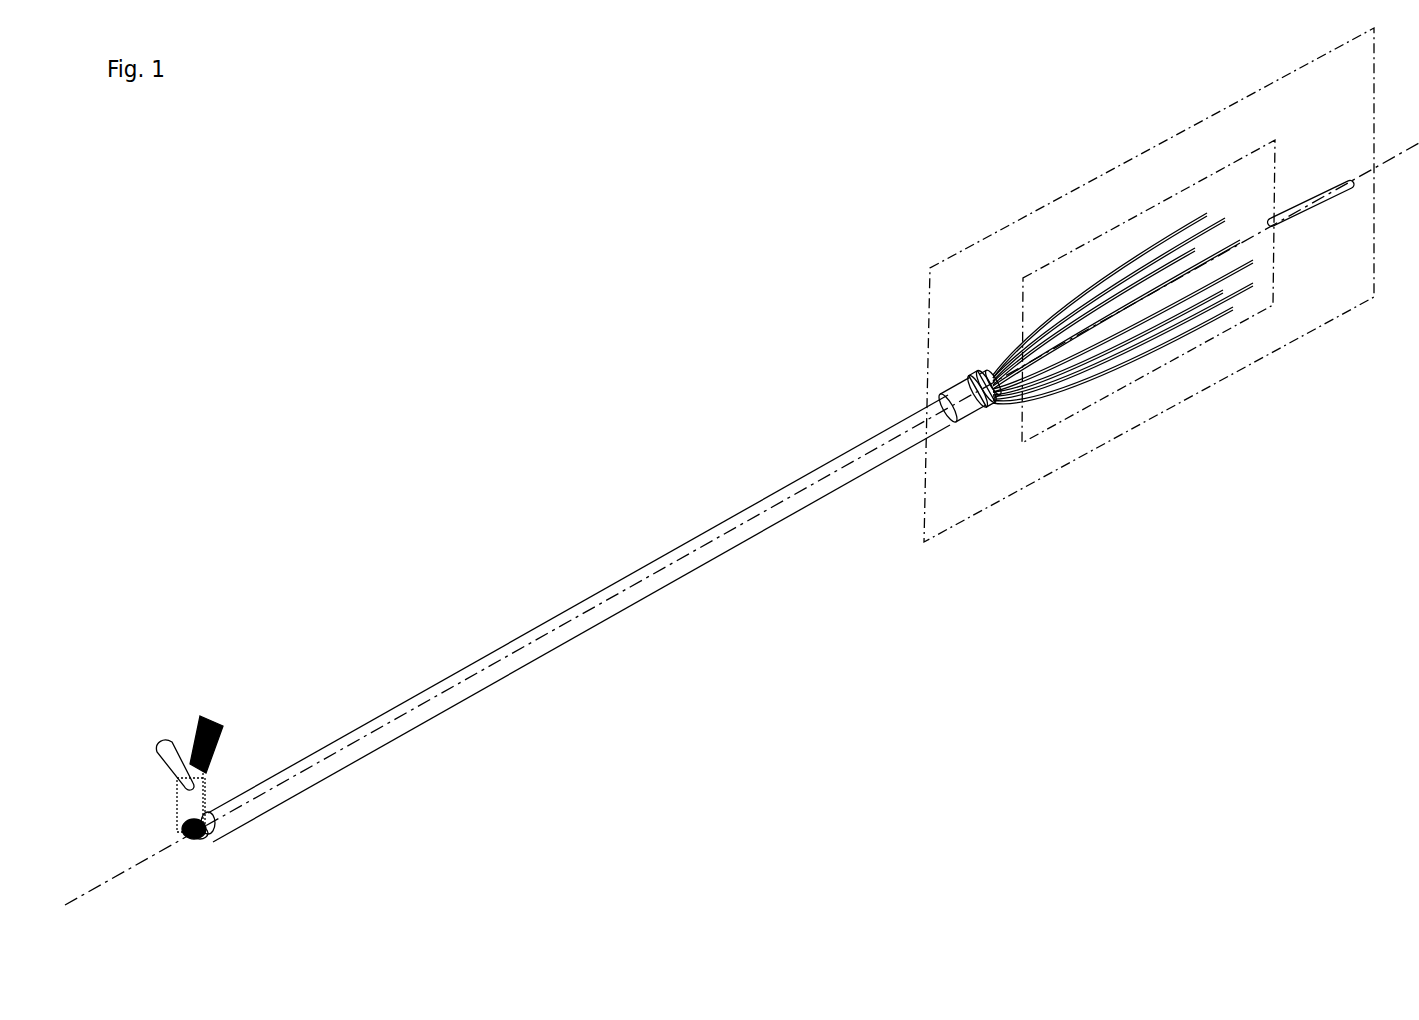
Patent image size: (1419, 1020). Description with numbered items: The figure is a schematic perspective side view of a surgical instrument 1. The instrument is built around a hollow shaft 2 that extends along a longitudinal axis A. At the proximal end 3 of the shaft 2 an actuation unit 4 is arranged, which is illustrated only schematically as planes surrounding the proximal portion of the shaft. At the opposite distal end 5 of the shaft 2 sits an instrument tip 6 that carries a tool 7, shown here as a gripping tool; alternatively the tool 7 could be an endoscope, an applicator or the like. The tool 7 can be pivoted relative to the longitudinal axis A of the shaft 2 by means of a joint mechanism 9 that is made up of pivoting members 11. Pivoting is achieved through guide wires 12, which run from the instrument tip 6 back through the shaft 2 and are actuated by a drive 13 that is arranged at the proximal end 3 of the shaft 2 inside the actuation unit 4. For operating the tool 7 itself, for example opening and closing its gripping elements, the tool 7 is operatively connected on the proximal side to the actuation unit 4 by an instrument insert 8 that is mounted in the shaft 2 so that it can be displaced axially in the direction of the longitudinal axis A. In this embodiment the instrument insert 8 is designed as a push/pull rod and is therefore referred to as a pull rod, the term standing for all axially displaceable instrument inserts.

The surgical instrument 1 is at (580, 475).
The hollow shaft 2 is at (665, 580).
The proximal end 3 is at (950, 395).
The actuation unit 4 is at (1188, 136).
The distal end 5 is at (226, 838).
The instrument tip 6 is at (185, 796).
The tool 7 is at (158, 745).
The instrument insert 8 is at (1343, 183).
The joint mechanism 9 is at (192, 843).
The pivoting members 11 is at (205, 845).
The guide wires 12 is at (1017, 332).
The drive 13 is at (1089, 243).
The longitudinal axis A is at (567, 625).